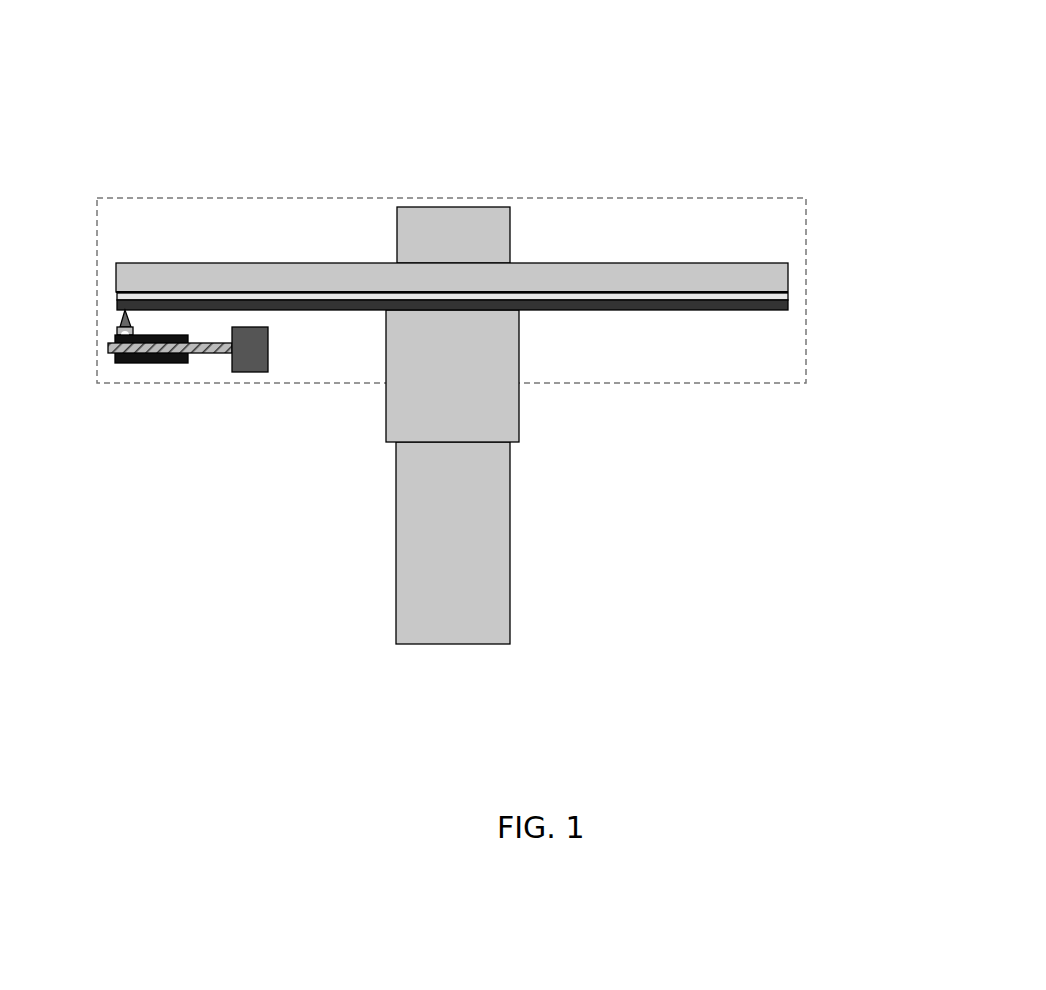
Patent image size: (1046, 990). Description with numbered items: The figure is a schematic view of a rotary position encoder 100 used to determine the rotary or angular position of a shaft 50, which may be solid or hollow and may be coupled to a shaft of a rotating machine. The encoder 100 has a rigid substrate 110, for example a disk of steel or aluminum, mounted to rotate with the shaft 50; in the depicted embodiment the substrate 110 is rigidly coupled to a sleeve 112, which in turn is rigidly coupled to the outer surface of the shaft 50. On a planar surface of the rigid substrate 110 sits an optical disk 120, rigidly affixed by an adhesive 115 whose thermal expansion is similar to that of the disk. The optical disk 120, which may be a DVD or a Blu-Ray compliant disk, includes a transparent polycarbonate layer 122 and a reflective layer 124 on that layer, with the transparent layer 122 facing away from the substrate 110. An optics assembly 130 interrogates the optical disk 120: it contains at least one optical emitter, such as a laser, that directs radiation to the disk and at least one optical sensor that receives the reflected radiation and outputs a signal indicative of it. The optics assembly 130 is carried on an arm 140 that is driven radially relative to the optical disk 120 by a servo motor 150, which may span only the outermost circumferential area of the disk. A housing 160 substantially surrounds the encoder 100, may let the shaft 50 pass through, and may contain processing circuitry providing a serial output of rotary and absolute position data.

The rotary position encoder 100 is at (617, 120).
The housing 160 is at (315, 198).
The rigid substrate 110 is at (660, 263).
The adhesive 115 is at (788, 292).
The reflective layer 124 is at (788, 298).
The transparent polycarbonate layer 122 is at (788, 305).
The sleeve 112 is at (510, 400).
The shaft 50 is at (490, 572).
The optical disk 120 is at (112, 305).
The optics assembly 130 is at (118, 335).
The arm 140 is at (200, 353).
The servo motor 150 is at (250, 365).